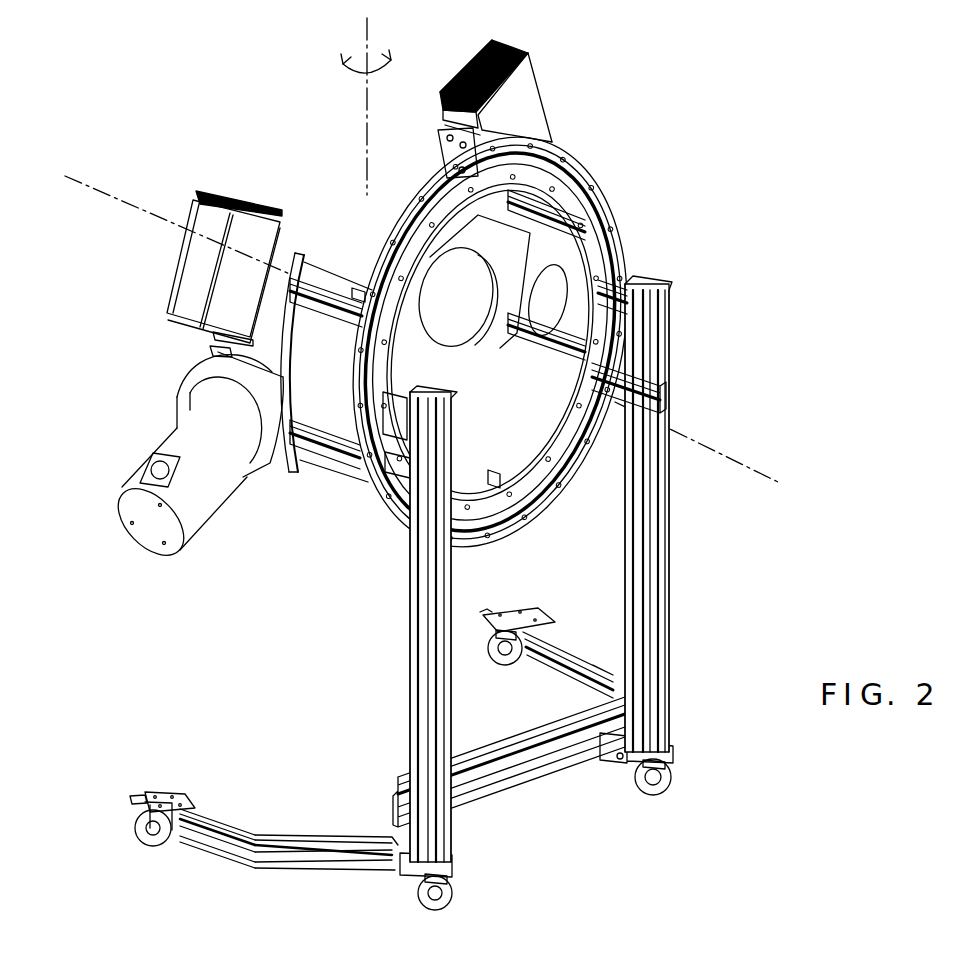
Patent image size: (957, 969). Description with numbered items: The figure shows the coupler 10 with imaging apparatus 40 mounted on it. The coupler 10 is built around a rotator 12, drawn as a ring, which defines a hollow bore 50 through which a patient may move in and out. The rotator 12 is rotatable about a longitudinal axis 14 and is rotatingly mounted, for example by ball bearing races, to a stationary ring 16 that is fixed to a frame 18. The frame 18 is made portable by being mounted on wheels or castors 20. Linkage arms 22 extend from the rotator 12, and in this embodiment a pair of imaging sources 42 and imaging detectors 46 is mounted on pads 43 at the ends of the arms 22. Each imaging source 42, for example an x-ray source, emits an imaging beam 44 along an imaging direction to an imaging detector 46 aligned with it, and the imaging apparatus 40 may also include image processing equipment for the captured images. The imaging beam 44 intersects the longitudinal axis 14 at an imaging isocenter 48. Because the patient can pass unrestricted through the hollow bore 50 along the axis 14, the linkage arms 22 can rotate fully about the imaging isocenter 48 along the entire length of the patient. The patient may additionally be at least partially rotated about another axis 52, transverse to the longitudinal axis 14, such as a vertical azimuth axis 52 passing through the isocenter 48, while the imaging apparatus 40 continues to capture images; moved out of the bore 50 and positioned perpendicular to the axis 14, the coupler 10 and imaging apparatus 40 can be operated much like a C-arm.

The coupler 10 is at (647, 236).
The rotator 12 is at (386, 518).
The longitudinal axis 14 is at (88, 178).
The stationary ring 16 is at (545, 470).
The frame 18 is at (660, 514).
The castors 20 is at (672, 777).
The linkage arms 22 is at (345, 293).
The imaging apparatus 40 is at (591, 107).
The imaging source 42 is at (465, 348).
The pads 43 is at (215, 352).
The imaging beam 44 is at (300, 378).
The imaging detector 46 is at (285, 250).
The imaging isocenter 48 is at (357, 288).
The hollow bore 50 is at (505, 465).
The axis 52 is at (370, 48).